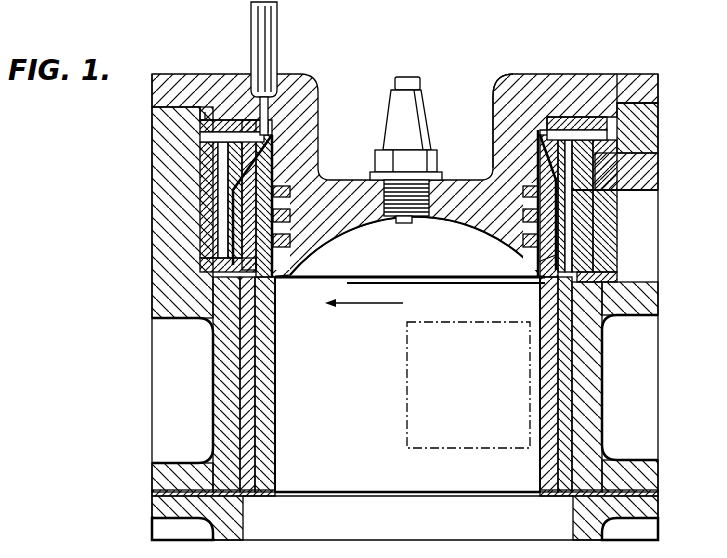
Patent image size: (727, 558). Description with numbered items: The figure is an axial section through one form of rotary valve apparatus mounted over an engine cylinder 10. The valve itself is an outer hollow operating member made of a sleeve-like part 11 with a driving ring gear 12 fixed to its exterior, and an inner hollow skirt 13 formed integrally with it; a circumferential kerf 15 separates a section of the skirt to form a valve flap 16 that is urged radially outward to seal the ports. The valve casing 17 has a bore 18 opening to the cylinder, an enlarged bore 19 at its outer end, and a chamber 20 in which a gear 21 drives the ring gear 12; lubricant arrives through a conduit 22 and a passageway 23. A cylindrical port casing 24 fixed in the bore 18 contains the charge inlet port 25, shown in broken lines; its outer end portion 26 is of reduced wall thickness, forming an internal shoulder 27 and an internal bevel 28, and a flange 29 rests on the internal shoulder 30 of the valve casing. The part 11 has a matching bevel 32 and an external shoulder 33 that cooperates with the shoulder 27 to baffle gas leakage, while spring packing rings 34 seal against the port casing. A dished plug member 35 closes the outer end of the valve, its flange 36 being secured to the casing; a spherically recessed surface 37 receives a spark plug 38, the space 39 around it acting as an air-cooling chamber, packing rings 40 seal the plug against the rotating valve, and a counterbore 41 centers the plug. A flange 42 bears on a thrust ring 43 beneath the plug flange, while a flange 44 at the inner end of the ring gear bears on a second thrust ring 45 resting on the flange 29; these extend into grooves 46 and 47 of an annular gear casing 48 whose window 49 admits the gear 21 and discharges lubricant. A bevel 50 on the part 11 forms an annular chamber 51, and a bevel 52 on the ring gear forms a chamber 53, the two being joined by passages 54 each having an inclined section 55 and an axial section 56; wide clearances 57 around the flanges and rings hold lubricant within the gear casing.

The engine cylinder 10 is at (590, 512).
The sleeve-like part 11 is at (547, 168).
The driving ring gear 12 is at (628, 138).
The inner hollow skirt 13 is at (267, 360).
The circumferentially extending kerf 15 is at (434, 282).
The valve flap 16 is at (548, 392).
The valve casing 17 is at (636, 305).
The bore 18 is at (580, 348).
The enlarged bore 19 is at (617, 228).
The chamber 20 is at (648, 191).
The gear 21 is at (632, 175).
The conduit 22 is at (266, 55).
The passageway 23 is at (268, 110).
The port casing 24 is at (250, 406).
The charge inlet port 25 is at (402, 384).
The outer end portion of port casing 26 is at (278, 240).
The internal shoulder 27 is at (212, 318).
The internal bevel 28 is at (278, 193).
The flange 29 is at (250, 288).
The internal shoulder of valve casing 30 is at (240, 296).
The bevel 32 is at (317, 136).
The external shoulder 33 is at (344, 306).
The spring packing rings 34 is at (538, 263).
The plug member 35 is at (507, 93).
The flange of plug member 36 is at (636, 88).
The spherically recessed inner surface 37 is at (352, 248).
The spark plug 38 is at (418, 122).
The space around spark plug 39 is at (372, 90).
The packing rings 40 is at (527, 225).
The counterbore 41 is at (205, 108).
The flange 42 is at (215, 138).
The thrust ring 43 is at (205, 125).
The flange 44 is at (222, 262).
The second thrust ring 45 is at (210, 275).
The groove 46 is at (612, 126).
The groove 47 is at (617, 258).
The annular gear casing 48 is at (592, 207).
The window 49 is at (615, 150).
The bevel 50 is at (222, 150).
The annular groove or chamber 51 is at (538, 134).
The bevel 52 is at (580, 265).
The annular groove or chamber 53 is at (548, 260).
The passages 54 is at (196, 185).
The inclined section 55 is at (238, 168).
The axial section 56 is at (278, 216).
The clearances 57 is at (594, 271).